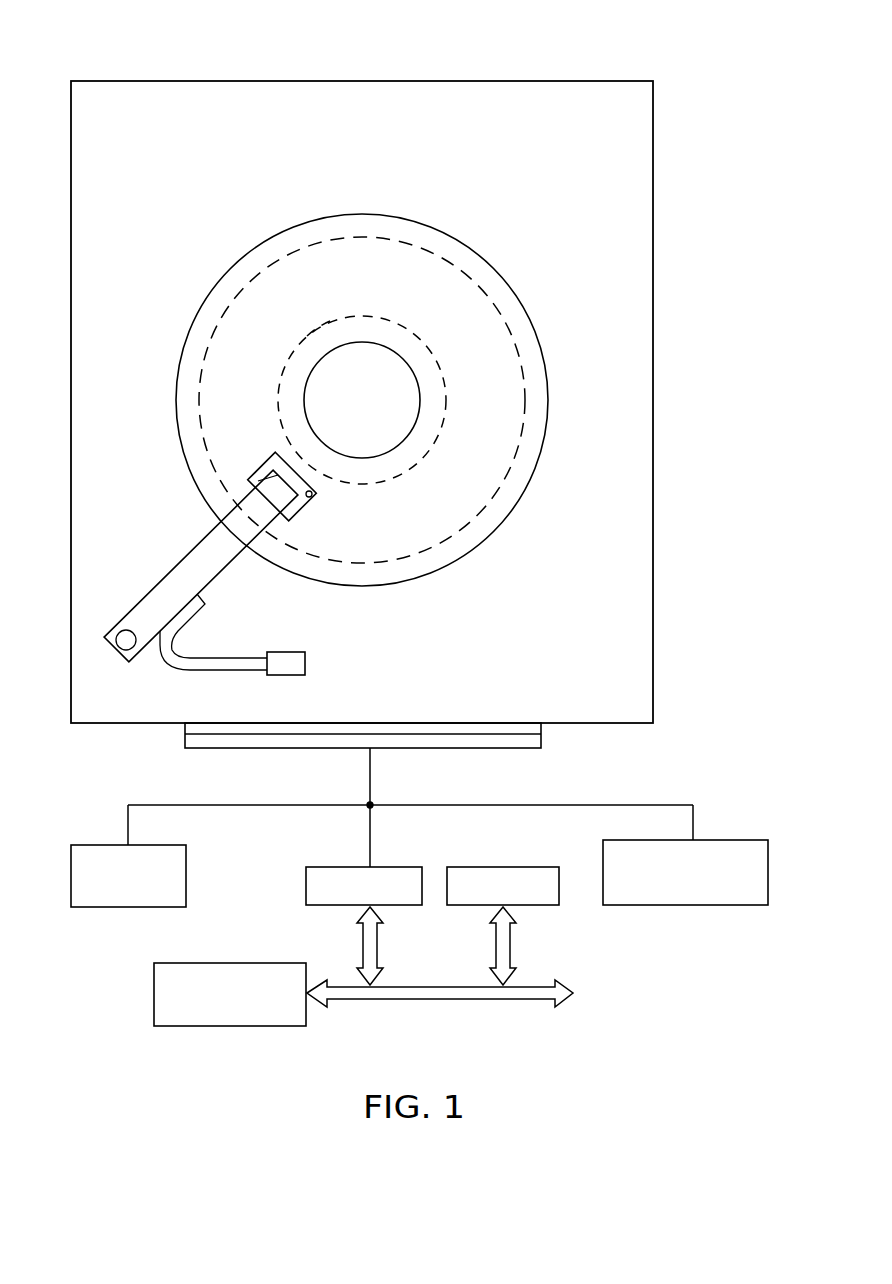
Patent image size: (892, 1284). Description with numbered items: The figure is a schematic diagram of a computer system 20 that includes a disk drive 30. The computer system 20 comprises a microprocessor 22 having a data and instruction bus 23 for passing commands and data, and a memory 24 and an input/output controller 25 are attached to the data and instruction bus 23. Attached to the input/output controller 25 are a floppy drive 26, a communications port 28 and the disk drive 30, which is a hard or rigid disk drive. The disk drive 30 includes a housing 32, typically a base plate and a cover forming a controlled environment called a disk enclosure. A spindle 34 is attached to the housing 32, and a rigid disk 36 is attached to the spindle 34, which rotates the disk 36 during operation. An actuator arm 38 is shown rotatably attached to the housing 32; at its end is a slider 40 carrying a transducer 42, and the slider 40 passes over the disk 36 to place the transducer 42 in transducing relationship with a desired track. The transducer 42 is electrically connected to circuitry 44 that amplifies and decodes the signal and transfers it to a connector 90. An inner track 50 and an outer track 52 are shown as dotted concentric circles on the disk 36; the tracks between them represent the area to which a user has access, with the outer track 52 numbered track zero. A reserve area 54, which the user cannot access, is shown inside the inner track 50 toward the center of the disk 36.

The computer system 20 is at (645, 958).
The microprocessor 22 is at (227, 963).
The data and instruction bus 23 is at (462, 1000).
The memory 24 is at (535, 867).
The input/output controller 25 is at (325, 867).
The floppy drive 26 is at (85, 845).
The communications port 28 is at (733, 840).
The disk drive 30 is at (536, 70).
The housing 32 is at (606, 146).
The spindle 34 is at (386, 367).
The rigid disk 36 is at (404, 219).
The actuator arm 38 is at (218, 574).
The slider 40 is at (258, 470).
The transducer 42 is at (312, 497).
The circuitry 44 is at (190, 671).
The inner track 50 is at (445, 413).
The outer track 52 is at (492, 498).
The reserve area 54 is at (316, 345).
The connector 90 is at (185, 749).